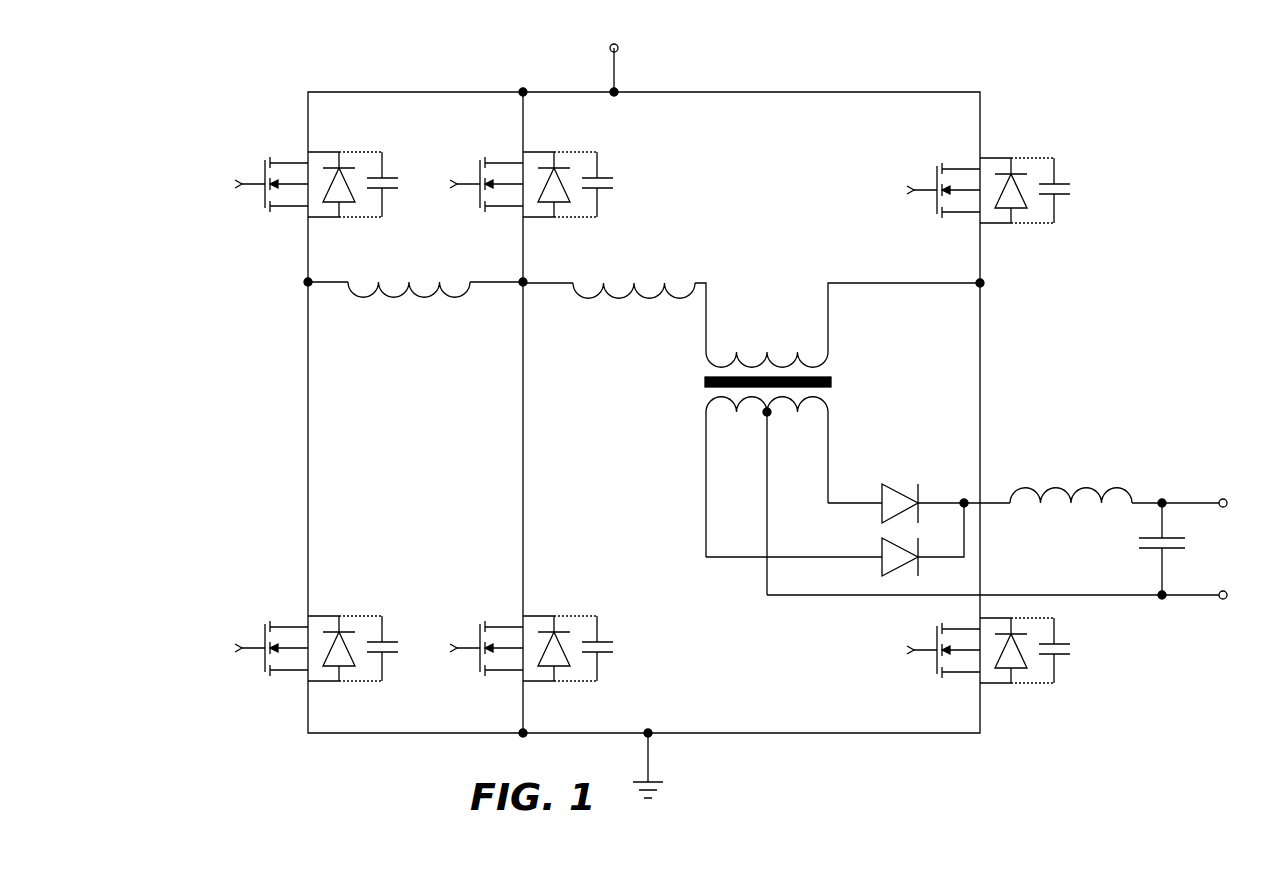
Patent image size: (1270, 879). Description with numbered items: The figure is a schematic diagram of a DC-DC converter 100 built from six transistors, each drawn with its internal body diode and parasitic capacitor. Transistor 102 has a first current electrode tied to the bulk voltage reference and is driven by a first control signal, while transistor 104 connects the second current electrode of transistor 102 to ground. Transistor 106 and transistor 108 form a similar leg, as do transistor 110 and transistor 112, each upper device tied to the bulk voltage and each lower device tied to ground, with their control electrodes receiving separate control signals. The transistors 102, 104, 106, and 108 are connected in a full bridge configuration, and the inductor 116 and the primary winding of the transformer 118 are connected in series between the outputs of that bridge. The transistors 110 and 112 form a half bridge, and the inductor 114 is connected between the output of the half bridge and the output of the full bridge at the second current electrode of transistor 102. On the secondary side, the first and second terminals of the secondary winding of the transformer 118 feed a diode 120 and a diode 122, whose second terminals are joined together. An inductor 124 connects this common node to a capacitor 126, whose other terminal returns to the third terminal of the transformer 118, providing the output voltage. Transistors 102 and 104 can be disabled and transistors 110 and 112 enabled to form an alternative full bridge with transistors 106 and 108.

The DC-DC converter 100 is at (780, 70).
The transistor 102 is at (512, 208).
The transistor 104 is at (500, 624).
The transistor 106 is at (963, 167).
The transistor 108 is at (958, 671).
The transistor 110 is at (292, 162).
The transistor 112 is at (290, 625).
The inductor 114 is at (427, 297).
The inductor 116 is at (582, 297).
The transformer 118 is at (710, 360).
The diode 120 is at (882, 572).
The diode 122 is at (890, 485).
The inductor 124 is at (1052, 488).
The capacitor 126 is at (1150, 549).